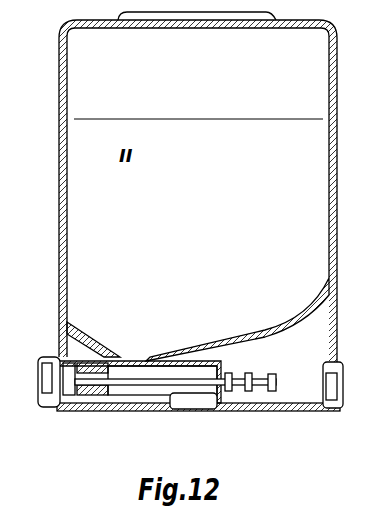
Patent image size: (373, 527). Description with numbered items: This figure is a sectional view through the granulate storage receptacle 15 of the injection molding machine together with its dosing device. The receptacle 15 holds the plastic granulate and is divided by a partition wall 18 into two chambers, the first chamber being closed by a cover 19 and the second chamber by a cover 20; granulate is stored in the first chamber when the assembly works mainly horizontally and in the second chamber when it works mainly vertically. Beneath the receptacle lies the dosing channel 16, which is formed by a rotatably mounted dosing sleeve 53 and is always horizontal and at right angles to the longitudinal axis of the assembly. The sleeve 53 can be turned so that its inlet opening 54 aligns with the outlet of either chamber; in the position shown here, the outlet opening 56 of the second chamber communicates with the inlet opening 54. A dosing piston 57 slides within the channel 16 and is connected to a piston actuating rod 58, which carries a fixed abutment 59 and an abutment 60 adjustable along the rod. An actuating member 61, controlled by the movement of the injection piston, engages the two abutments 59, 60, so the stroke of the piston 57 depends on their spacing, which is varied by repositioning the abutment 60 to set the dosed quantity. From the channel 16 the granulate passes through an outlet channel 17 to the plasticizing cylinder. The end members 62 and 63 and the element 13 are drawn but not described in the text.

The container wall 13 is at (339, 44).
The granulate storage receptacle 15 is at (223, 156).
The partition wall 18 is at (351, 220).
The cover 19 is at (351, 278).
The cover 20 is at (268, 20).
The dosing sleeve 53 is at (53, 358).
The inlet opening 54 is at (122, 357).
The outlet opening 56 is at (138, 358).
The dosing piston 57 is at (90, 396).
The piston actuating rod 58 is at (127, 386).
The dosing channel 16 is at (163, 409).
The outlet channel 17 is at (188, 396).
The fixed abutment 59 is at (277, 388).
The adjustable abutment 60 is at (229, 392).
The actuating member 61 is at (250, 392).
The left end cap 62 is at (47, 407).
The right end cap 63 is at (338, 410).